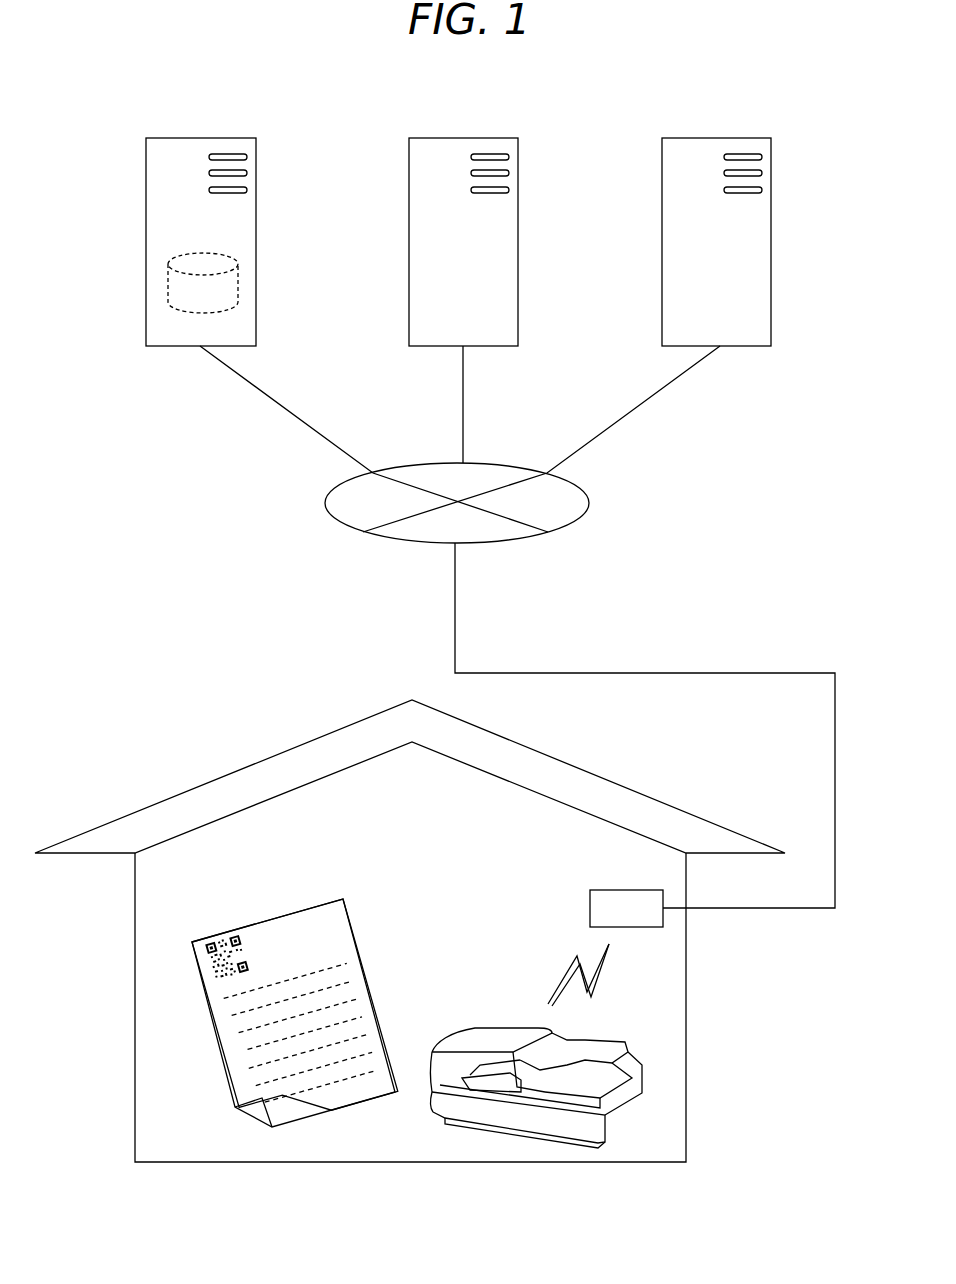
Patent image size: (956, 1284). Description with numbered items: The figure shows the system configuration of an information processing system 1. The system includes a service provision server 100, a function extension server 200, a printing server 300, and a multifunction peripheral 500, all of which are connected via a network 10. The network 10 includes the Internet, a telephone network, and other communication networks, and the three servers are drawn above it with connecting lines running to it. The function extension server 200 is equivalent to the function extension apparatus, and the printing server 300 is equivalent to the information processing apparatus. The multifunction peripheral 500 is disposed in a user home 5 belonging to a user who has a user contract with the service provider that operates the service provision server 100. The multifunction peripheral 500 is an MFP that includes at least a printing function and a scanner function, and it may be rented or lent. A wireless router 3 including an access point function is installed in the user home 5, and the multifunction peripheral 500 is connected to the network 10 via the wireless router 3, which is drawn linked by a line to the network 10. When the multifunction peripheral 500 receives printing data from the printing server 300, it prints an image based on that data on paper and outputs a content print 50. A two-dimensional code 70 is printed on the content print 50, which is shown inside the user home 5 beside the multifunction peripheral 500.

The information processing system 1 is at (233, 544).
The service provision server 100 is at (162, 137).
The function extension server 200 is at (428, 137).
The printing server 300 is at (677, 137).
The network 10 is at (509, 465).
The user home 5 is at (283, 750).
The wireless router 3 is at (605, 890).
The content print 50 is at (305, 910).
The two-dimensional code 70 is at (213, 943).
The multifunction peripheral 500 is at (497, 1026).